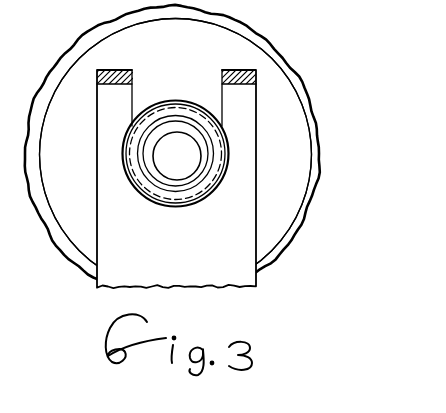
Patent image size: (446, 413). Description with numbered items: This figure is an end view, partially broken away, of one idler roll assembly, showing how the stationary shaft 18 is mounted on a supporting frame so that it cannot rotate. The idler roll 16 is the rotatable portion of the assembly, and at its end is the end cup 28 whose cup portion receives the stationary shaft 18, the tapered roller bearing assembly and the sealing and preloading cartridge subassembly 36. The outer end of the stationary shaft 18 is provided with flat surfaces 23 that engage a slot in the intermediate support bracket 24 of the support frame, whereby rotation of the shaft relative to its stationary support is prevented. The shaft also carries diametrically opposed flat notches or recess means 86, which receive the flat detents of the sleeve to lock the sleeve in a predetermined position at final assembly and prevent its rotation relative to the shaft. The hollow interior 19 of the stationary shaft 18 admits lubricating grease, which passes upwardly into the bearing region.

The idler roll 16 is at (360, 82).
The end cup 28 is at (320, 141).
The sealing and preloading cartridge subassembly 36 is at (283, 182).
The intermediate support bracket 24 is at (121, 284).
The flat surfaces 23 is at (134, 155).
The recess means 86 is at (179, 107).
The stationary shaft 18 is at (139, 188).
The hollow interior 19 is at (189, 166).